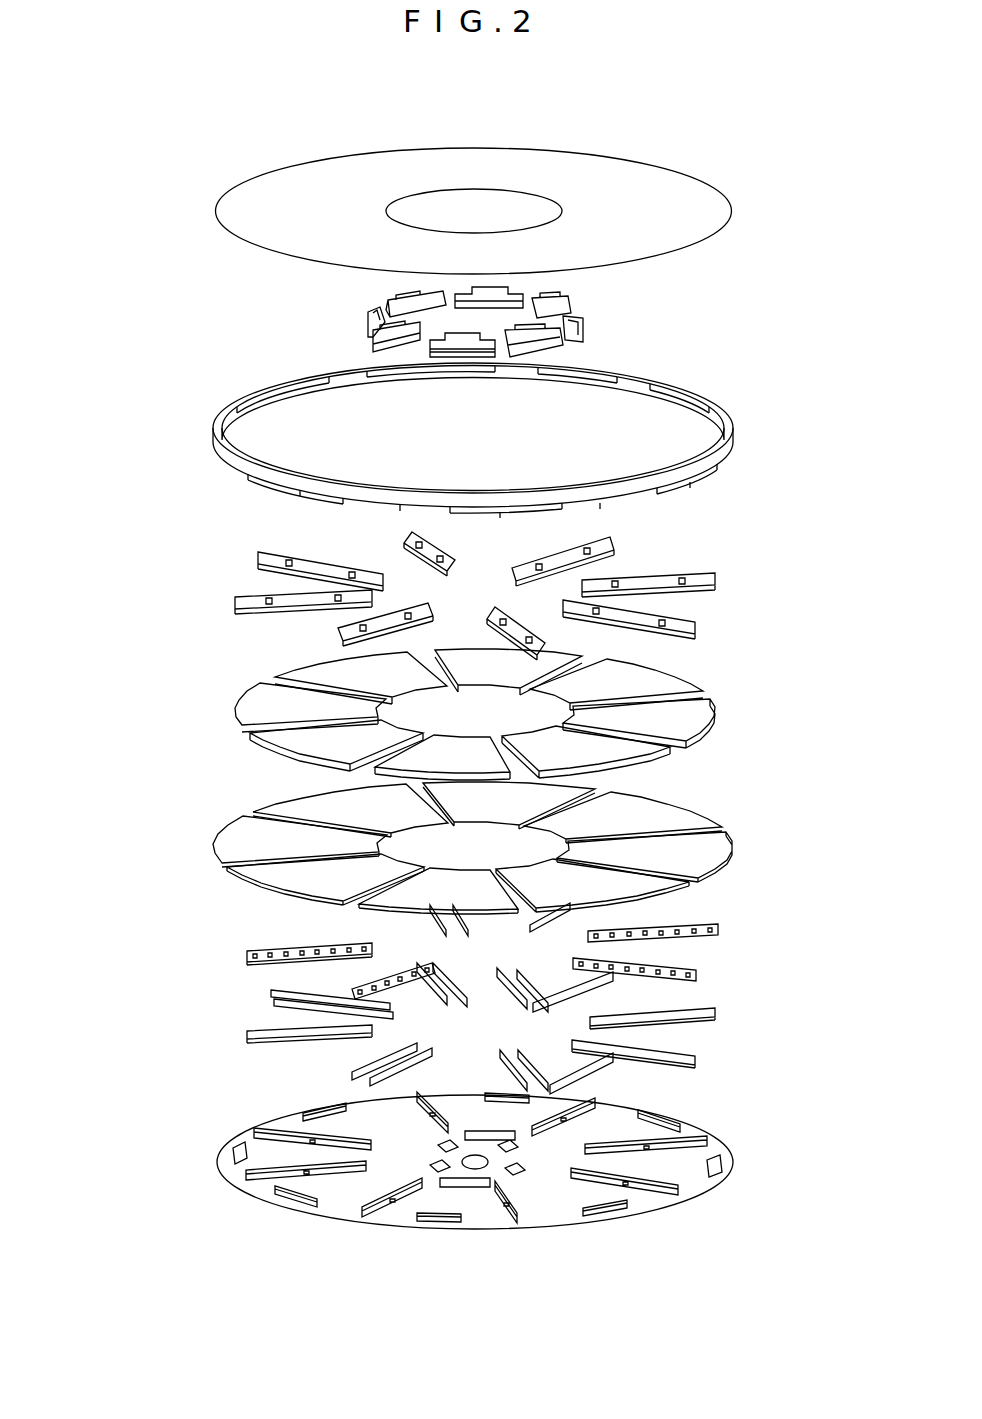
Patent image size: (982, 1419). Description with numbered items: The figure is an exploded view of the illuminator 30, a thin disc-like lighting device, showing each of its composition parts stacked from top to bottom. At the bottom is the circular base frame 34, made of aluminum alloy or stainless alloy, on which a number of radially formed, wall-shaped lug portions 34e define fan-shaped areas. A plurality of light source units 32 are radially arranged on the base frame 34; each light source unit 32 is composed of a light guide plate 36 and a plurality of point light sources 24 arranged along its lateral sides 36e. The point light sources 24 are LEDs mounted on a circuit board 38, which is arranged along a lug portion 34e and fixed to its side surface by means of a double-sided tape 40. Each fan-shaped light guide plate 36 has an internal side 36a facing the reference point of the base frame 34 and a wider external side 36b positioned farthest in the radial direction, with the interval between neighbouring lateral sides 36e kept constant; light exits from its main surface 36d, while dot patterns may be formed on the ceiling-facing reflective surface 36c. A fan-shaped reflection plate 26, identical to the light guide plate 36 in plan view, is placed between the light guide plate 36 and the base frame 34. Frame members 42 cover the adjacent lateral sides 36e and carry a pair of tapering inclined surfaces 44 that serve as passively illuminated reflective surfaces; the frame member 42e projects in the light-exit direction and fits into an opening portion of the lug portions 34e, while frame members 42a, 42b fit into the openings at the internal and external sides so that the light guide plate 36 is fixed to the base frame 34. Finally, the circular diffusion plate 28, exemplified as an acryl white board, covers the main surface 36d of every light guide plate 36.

The diffusion plate 28 is at (267, 209).
The illuminator 30 is at (464, 184).
The frame member 42 is at (388, 473).
The frame member 42a is at (403, 300).
The frame member 42b is at (215, 440).
The frame member 42e is at (402, 596).
The inclined surface 44 is at (493, 602).
The light guide plate 36 is at (441, 709).
The internal side 36a is at (398, 692).
The external side 36b is at (233, 698).
The reflective surface 36c is at (245, 753).
The main surface 36d is at (255, 658).
The lateral side 36e is at (502, 738).
The reflection plate 26 is at (240, 838).
The point light source 24 is at (404, 998).
The light source unit 32 is at (332, 1004).
The circuit board 38 is at (287, 950).
The double-sided tape 40 is at (247, 1035).
The base frame 34 is at (513, 1190).
The lug portion 34e is at (373, 1210).